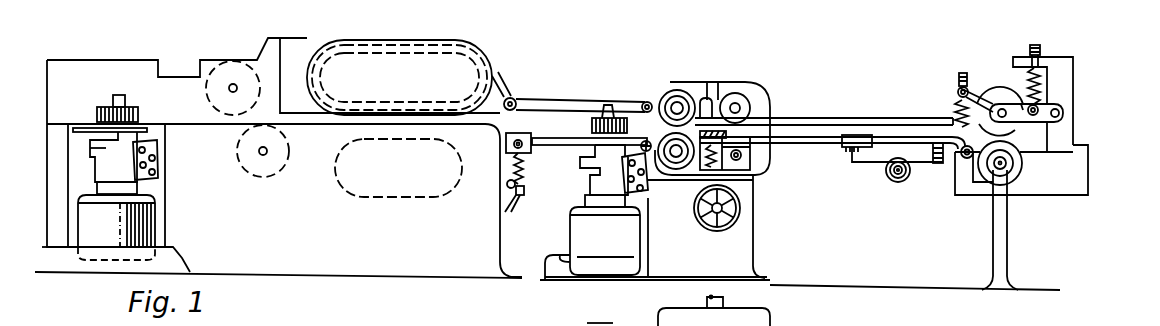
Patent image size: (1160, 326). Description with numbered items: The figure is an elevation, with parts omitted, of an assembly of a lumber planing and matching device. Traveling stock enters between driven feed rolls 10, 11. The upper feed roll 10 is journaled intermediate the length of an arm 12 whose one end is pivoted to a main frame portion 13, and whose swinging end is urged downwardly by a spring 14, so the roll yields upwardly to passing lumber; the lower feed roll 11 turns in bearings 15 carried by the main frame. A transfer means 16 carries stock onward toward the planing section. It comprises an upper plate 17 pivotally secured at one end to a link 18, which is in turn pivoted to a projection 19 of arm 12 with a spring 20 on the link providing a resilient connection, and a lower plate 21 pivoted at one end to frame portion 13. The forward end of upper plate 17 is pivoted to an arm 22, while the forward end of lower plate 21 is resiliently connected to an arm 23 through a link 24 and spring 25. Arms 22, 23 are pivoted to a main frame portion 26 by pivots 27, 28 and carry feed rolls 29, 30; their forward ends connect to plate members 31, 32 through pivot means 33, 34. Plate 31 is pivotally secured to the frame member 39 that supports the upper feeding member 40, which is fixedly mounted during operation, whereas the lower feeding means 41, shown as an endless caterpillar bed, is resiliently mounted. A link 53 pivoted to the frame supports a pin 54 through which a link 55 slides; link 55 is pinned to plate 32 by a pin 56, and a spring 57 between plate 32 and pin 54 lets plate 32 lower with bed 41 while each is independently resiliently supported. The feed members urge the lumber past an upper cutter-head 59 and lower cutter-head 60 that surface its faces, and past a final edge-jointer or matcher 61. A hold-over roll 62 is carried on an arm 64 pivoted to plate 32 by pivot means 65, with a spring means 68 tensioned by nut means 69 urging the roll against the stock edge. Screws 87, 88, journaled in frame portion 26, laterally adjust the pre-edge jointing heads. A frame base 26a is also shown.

The feed roll 10 is at (1005, 126).
The feed roll 11 is at (1023, 163).
The arm 12 is at (1045, 110).
The main frame portion 13 is at (1066, 197).
The spring 14 is at (1023, 78).
The bearings 15 is at (1010, 170).
The transfer means 16 is at (868, 118).
The upper plate 17 is at (860, 118).
The link means 18 is at (961, 72).
The projection 19 is at (974, 100).
The spring 20 is at (955, 103).
The lower plate 21 is at (785, 135).
The arm 22 is at (700, 83).
The arm 23 is at (680, 168).
The link 24 is at (752, 176).
The spring 25 is at (748, 161).
The main frame portion 26 is at (756, 270).
The frame base 26a is at (400, 276).
The pivot 27 is at (742, 98).
The pivot 28 is at (742, 152).
The feed roll 29 is at (680, 92).
The feed roll 30 is at (673, 174).
The plate member 31 is at (535, 107).
The plate member 32 is at (534, 139).
The pivot means 33 is at (646, 102).
The pivot means 34 is at (650, 168).
The frame member 39 is at (480, 48).
The upper feeding member 40 is at (394, 46).
The lower feeding means 41 is at (381, 197).
The link 53 is at (509, 205).
The pin 54 is at (524, 197).
The link means 55 is at (506, 171).
The pin 56 is at (515, 140).
The spring 57 is at (524, 175).
The upper cutter-head 59 is at (232, 74).
The lower cutter-head 60 is at (263, 172).
The edge-jointer or matcher 61 is at (128, 113).
The hold-over roll 62 is at (851, 151).
The arm 64 is at (878, 160).
The pivot means 65 is at (935, 165).
The spring means 68 is at (897, 183).
The nut means 69 is at (903, 177).
The screw 87 is at (620, 167).
The screw 88 is at (626, 182).